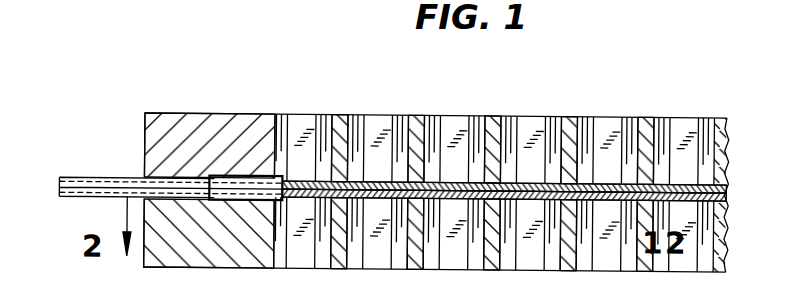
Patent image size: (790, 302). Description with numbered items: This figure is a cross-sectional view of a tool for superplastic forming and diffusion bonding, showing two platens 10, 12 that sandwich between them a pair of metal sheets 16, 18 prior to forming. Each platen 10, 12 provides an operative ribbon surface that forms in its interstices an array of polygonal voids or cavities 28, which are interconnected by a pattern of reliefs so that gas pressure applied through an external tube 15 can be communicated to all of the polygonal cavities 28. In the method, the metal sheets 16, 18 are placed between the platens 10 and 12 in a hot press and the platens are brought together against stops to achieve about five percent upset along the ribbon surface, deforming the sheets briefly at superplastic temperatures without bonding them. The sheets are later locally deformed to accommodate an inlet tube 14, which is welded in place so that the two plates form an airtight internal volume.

The platen 10 is at (158, 147).
The platen 12 is at (167, 267).
The inlet tube 14 is at (95, 198).
The external tube 15 is at (181, 199).
The metal sheet 16 is at (725, 182).
The metal sheet 18 is at (726, 196).
The polygonal cavities 28 is at (608, 128).